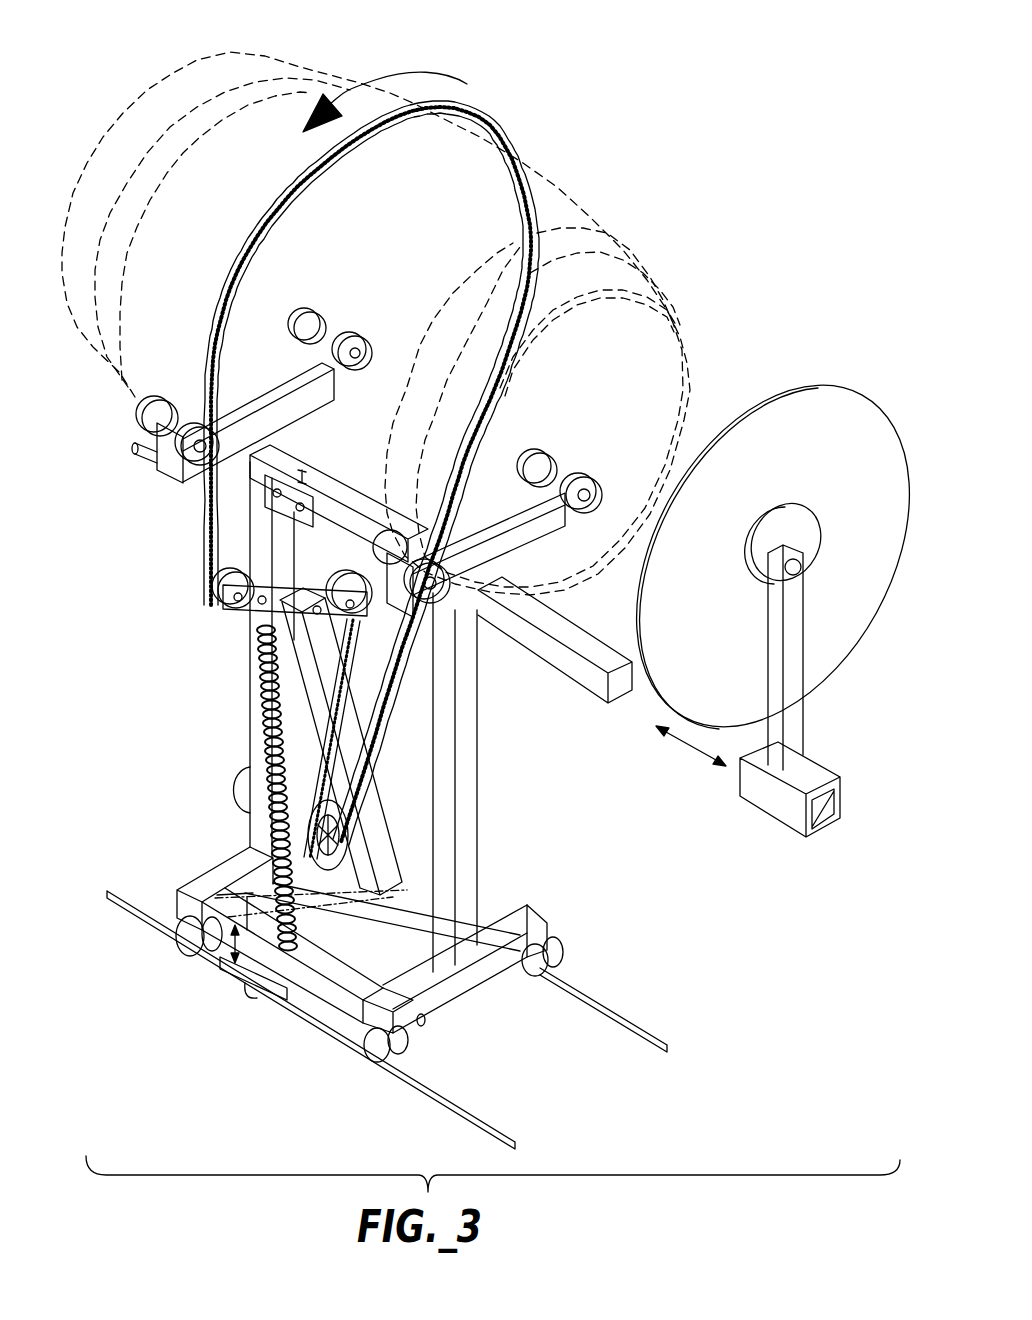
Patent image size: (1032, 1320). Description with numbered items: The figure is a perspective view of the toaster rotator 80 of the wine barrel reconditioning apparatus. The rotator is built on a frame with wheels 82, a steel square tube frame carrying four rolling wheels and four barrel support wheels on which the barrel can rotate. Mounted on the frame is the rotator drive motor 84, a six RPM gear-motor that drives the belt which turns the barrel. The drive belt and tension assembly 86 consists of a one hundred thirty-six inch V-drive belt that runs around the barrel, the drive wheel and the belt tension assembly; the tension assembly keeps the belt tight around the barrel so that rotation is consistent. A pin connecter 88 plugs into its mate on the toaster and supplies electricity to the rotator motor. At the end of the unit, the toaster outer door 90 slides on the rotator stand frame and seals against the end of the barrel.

The toaster rotator 80 is at (300, 1082).
The frame with wheels 82 is at (467, 853).
The rotator drive motor 84 is at (242, 782).
The drive belt and tension assembly 86 is at (212, 565).
The pin connecter 88 is at (142, 452).
The toaster outer door 90 is at (830, 650).